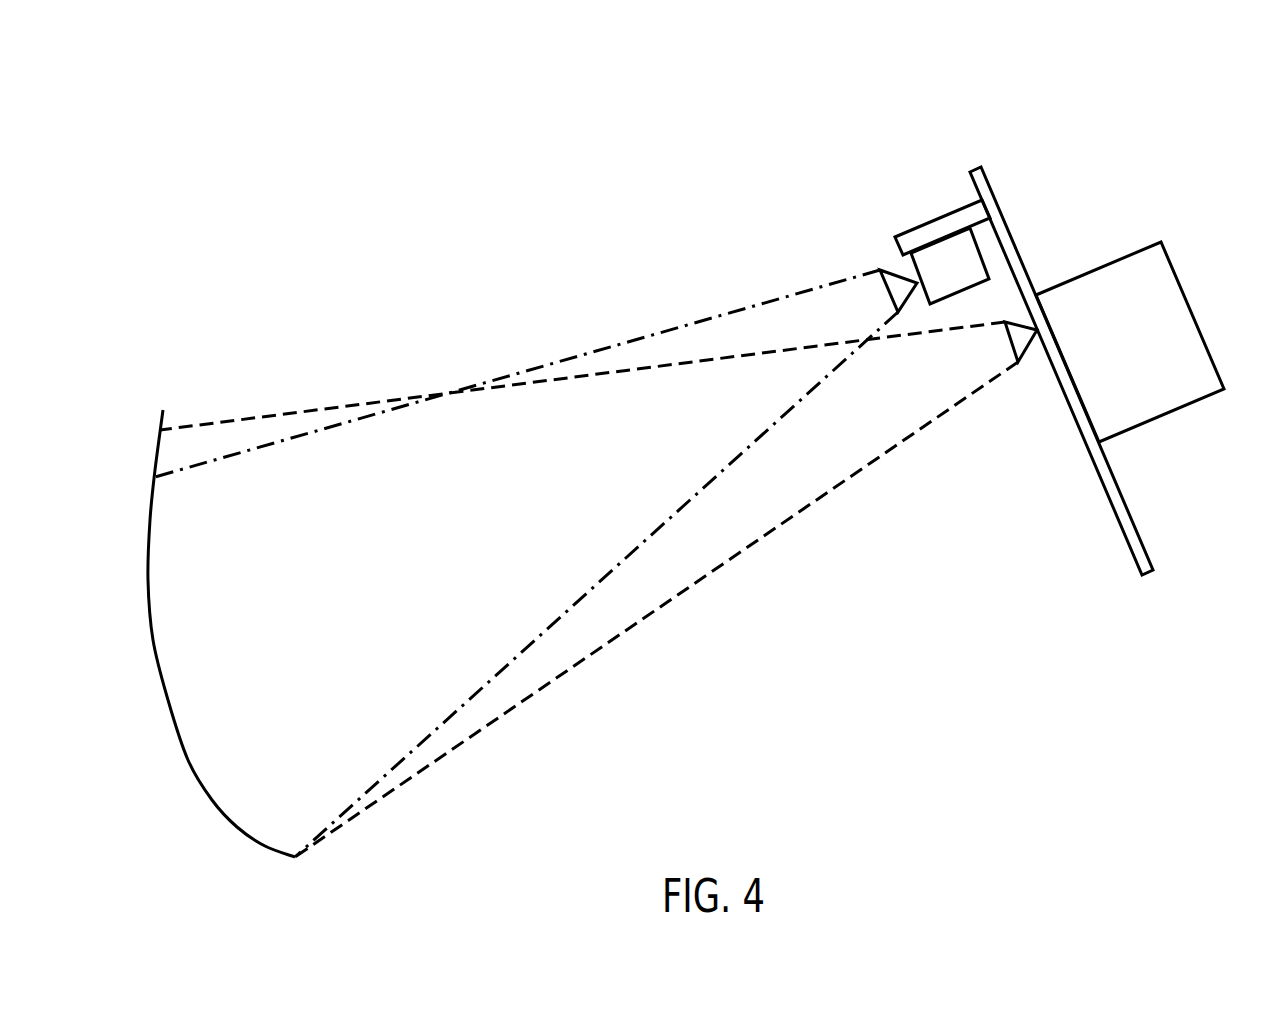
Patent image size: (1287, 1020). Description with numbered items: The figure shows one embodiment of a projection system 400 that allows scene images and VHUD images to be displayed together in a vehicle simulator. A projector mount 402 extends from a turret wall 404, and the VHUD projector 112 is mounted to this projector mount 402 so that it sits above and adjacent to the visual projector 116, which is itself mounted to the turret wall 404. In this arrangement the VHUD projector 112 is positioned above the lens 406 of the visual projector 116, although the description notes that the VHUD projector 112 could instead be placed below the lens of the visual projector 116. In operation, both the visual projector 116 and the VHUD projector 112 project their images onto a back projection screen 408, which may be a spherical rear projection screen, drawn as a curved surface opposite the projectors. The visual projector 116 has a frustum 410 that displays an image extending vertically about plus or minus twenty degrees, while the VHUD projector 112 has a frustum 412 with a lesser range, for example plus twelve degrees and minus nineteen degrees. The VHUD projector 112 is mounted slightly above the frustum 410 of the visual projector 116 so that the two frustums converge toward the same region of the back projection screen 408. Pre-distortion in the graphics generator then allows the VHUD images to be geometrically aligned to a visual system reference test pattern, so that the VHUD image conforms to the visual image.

The projection system 400 is at (450, 78).
The projector mount 402 is at (927, 222).
The turret wall 404 is at (1008, 232).
The VHUD projector 112 is at (914, 266).
The visual projector 116 is at (1172, 263).
The lens 406 is at (1003, 345).
The back projection screen 408 is at (236, 824).
The frustum 410 is at (911, 402).
The frustum 412 is at (321, 627).